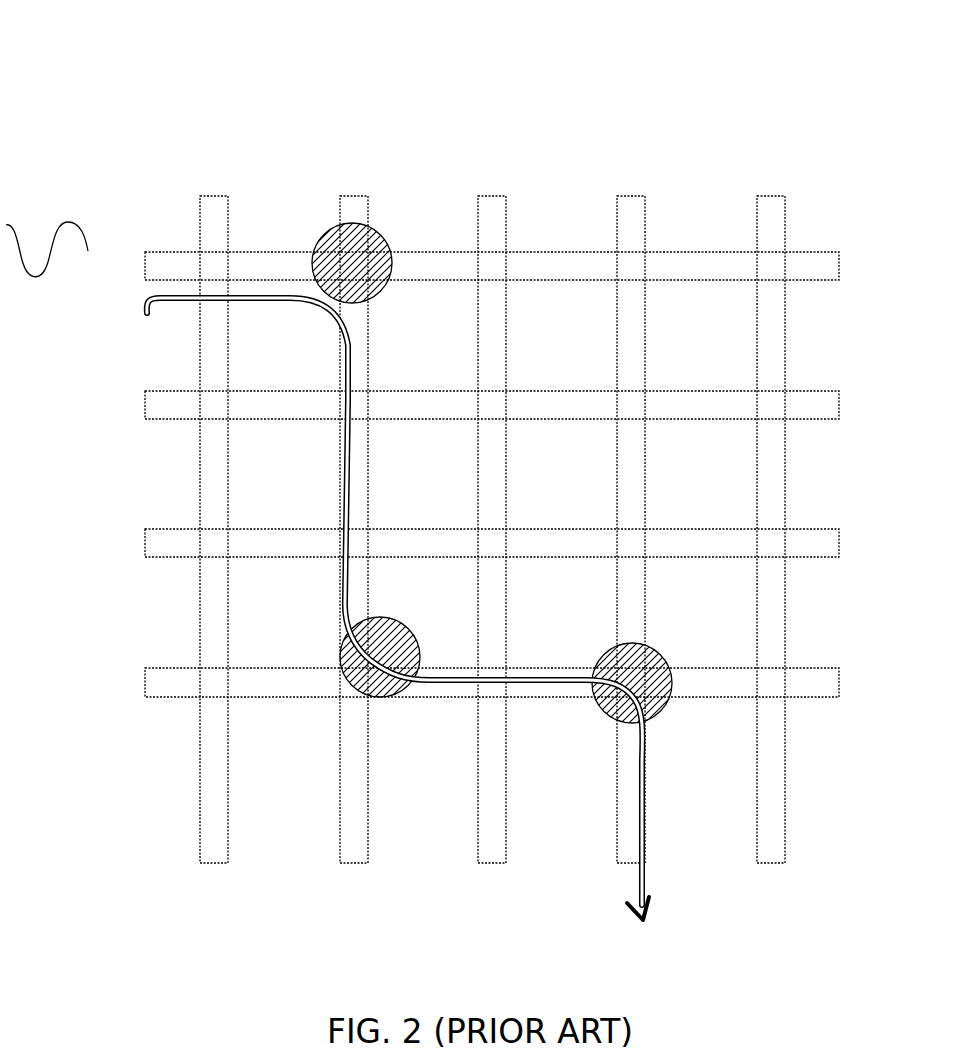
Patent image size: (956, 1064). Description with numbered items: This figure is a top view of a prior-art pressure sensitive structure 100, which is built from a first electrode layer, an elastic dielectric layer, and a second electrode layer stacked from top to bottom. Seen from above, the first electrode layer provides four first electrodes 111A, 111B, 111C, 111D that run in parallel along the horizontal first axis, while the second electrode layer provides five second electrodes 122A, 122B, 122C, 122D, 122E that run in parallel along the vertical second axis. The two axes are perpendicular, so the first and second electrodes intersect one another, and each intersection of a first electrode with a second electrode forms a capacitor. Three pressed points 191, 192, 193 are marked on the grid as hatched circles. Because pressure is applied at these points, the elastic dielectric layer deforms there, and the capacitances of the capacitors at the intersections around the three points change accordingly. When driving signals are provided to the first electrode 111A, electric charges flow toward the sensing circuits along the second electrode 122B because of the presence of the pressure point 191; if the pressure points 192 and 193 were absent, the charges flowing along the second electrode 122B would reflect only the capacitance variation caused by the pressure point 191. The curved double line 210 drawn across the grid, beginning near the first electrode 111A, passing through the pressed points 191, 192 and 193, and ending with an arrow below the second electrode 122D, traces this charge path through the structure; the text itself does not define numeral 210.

The pressure sensitive structure 100 is at (105, 41).
The first electrode 111A is at (701, 251).
The first electrode 111B is at (701, 390).
The first electrode 111C is at (701, 528).
The first electrode 111D is at (701, 667).
The second electrode 122A is at (228, 808).
The second electrode 122B is at (368, 808).
The second electrode 122C is at (506, 808).
The second electrode 122D is at (645, 808).
The second electrode 122E is at (785, 808).
The pressure point 191 is at (380, 238).
The pressure point 192 is at (398, 618).
The pressure point 193 is at (606, 650).
The touch trajectory / signal path 210 is at (178, 303).